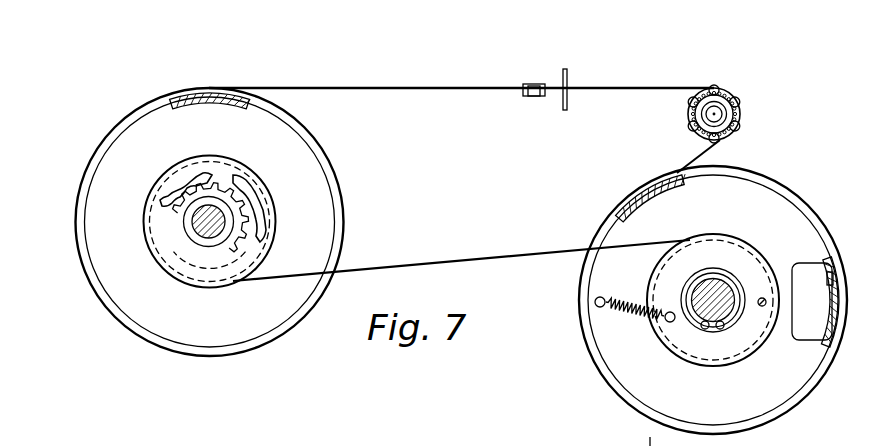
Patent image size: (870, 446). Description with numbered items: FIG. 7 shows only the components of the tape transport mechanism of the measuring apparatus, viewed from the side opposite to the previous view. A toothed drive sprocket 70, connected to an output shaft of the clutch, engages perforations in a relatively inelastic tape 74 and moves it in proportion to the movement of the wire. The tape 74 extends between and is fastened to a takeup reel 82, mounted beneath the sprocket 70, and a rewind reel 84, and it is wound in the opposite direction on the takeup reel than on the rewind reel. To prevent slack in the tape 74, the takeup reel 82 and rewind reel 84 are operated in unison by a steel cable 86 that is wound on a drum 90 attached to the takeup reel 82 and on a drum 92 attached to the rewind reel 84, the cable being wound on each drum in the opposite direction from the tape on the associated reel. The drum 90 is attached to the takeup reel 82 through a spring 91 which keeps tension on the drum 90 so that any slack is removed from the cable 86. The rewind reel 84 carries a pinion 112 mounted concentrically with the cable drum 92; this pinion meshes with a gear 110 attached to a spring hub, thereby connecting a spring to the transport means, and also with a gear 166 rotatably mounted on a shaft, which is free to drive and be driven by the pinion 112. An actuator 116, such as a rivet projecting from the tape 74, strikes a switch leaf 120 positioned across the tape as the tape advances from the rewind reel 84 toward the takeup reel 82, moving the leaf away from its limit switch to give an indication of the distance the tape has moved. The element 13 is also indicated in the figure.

The rewind reel 84 is at (133, 302).
The drum 92 is at (188, 277).
The pinion 112 is at (218, 183).
The gear 110 is at (185, 183).
The gear 166 is at (242, 193).
The tape 74 is at (470, 92).
The actuator 116 is at (531, 84).
The switch leaf 120 is at (567, 72).
The drive sprocket 70 is at (688, 115).
The steel cable 86 is at (452, 266).
The takeup reel 82 is at (802, 233).
The drum 90 is at (740, 253).
The spring 91 is at (632, 320).
The frame member 13 is at (626, 439).